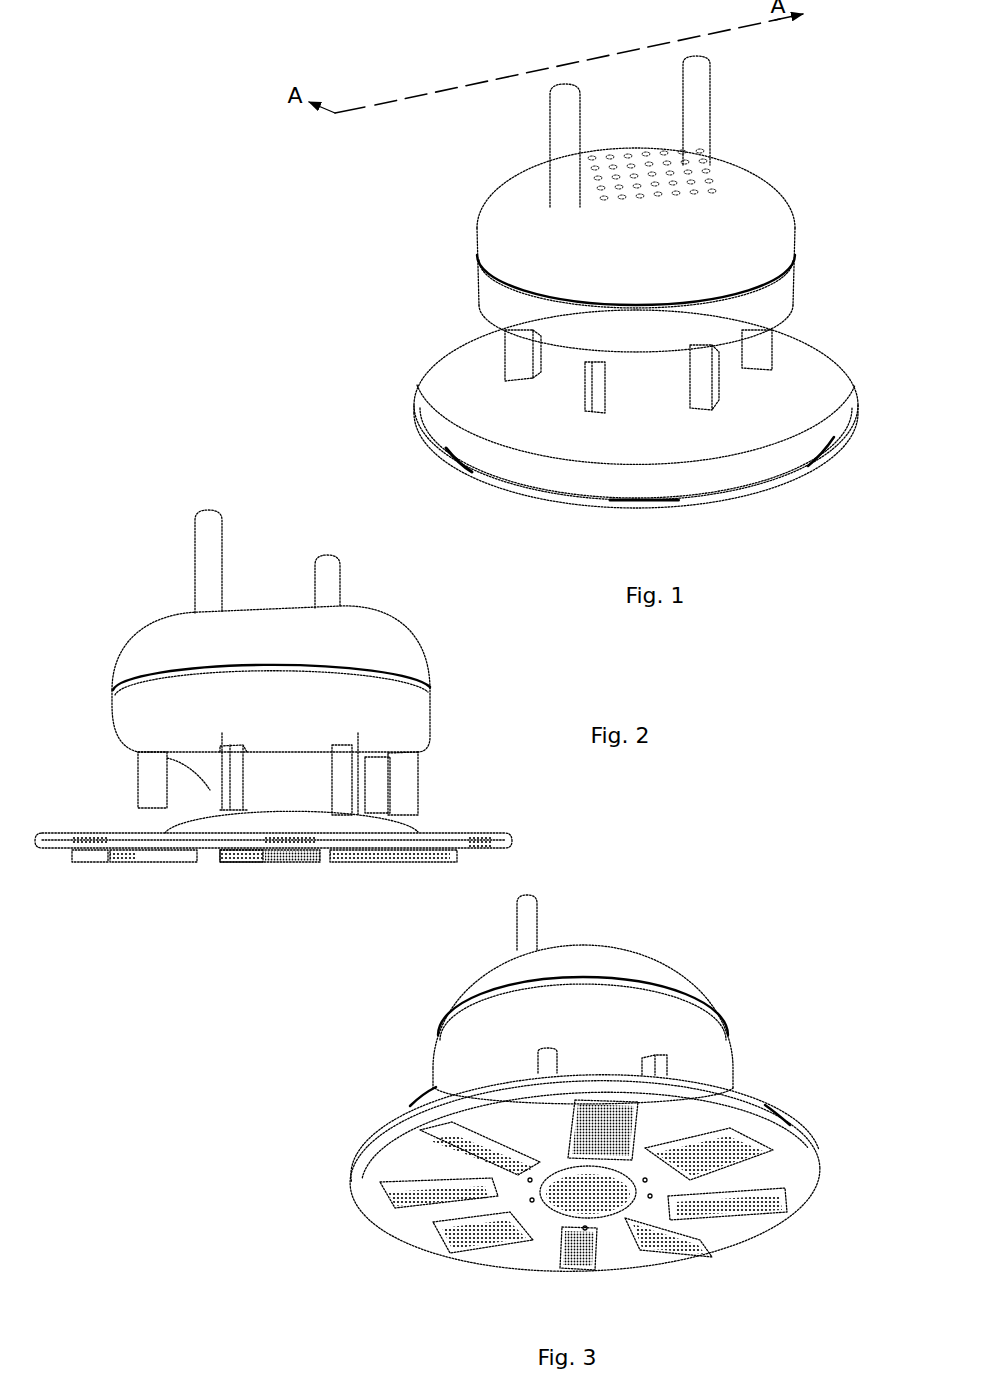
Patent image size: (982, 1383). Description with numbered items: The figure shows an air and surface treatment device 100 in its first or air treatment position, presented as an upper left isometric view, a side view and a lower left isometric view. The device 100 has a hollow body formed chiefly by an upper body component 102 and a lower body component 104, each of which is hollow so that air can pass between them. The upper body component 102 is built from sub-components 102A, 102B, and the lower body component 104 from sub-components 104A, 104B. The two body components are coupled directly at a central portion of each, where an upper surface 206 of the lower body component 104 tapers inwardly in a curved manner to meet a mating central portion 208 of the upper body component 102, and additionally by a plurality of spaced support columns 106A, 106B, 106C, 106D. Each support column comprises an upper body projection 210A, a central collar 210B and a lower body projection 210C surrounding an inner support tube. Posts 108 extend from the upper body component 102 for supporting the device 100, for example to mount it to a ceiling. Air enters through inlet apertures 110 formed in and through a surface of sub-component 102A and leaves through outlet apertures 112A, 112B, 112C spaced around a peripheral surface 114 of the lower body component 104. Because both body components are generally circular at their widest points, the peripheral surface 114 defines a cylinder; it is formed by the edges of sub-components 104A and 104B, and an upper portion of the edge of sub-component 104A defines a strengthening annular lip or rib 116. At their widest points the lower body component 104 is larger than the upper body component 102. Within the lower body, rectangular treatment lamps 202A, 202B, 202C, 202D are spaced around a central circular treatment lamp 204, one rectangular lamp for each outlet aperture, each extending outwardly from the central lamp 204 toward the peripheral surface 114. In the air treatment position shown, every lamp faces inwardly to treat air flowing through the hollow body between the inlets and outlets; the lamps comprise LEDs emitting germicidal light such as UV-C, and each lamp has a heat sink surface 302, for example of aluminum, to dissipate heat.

In FIG. 1, the air and surface treatment device 100 is at (832, 88).
In FIG. 2, the air and surface treatment device 100 is at (168, 592).
In FIG. 3, the air and surface treatment device 100 is at (707, 950).
In FIG. 1, the upper body component 102 is at (805, 197).
In FIG. 2, the upper body component 102 is at (271, 631).
In FIG. 1, the sub-component of upper body component 102A is at (636, 228).
In FIG. 3, the sub-component of upper body component 102A is at (583, 1016).
In FIG. 1, the sub-component of upper body component 102B is at (636, 328).
In FIG. 3, the sub-component of upper body component 102B is at (584, 1048).
In FIG. 1, the lower body component 104 is at (862, 362).
In FIG. 2, the lower body component 104 is at (269, 880).
In FIG. 1, the sub-component of lower body component 104A is at (636, 405).
In FIG. 1, the sub-component of lower body component 104B is at (838, 454).
In FIG. 3, the sub-component of lower body component 104B is at (574, 1175).
In FIG. 1, the support column 106A is at (505, 332).
In FIG. 2, the support column 106A is at (138, 776).
In FIG. 1, the support column 106B is at (585, 368).
In FIG. 3, the support column 106B is at (542, 1050).
In FIG. 1, the support column 106C is at (690, 356).
In FIG. 1, the support column 106D is at (760, 360).
In FIG. 1, the posts 108 is at (582, 108).
In FIG. 2, the posts 108 is at (267, 561).
In FIG. 3, the posts 108 is at (536, 917).
In FIG. 1, the inlet apertures 110 is at (620, 200).
In FIG. 1, the outlet aperture 112A is at (462, 462).
In FIG. 3, the outlet aperture 112A is at (416, 1100).
In FIG. 1, the outlet aperture 112B is at (653, 505).
In FIG. 1, the outlet aperture 112C is at (820, 458).
In FIG. 2, the outlet aperture 112C is at (485, 850).
In FIG. 3, the outlet aperture 112C is at (791, 1113).
In FIG. 1, the peripheral surface 114 is at (538, 493).
In FIG. 2, the peripheral surface 114 is at (370, 845).
In FIG. 3, the peripheral surface 114 is at (372, 1132).
In FIG. 1, the strengthening annular lip or rib 116 is at (420, 361).
In FIG. 2, the rectangular treatment lamp 202A is at (85, 865).
In FIG. 3, the rectangular treatment lamp 202A is at (406, 1210).
In FIG. 2, the rectangular treatment lamp 202B is at (163, 865).
In FIG. 3, the rectangular treatment lamp 202B is at (440, 1160).
In FIG. 2, the rectangular treatment lamp 202C is at (297, 865).
In FIG. 3, the rectangular treatment lamp 202C is at (564, 1138).
In FIG. 2, the pad 202D is at (410, 865).
In FIG. 2, the central circular treatment lamp 204 is at (234, 865).
In FIG. 3, the central circular treatment lamp 204 is at (614, 1176).
In FIG. 2, the upper surface of lower body component 206 is at (292, 767).
In FIG. 2, the mating central portion of upper body component 208 is at (263, 751).
In FIG. 2, the upper body projection 210A is at (417, 750).
In FIG. 2, the central collar 210B is at (415, 782).
In FIG. 2, the strut 210C is at (413, 818).
In FIG. 3, the heat sink surface 302 is at (682, 1257).